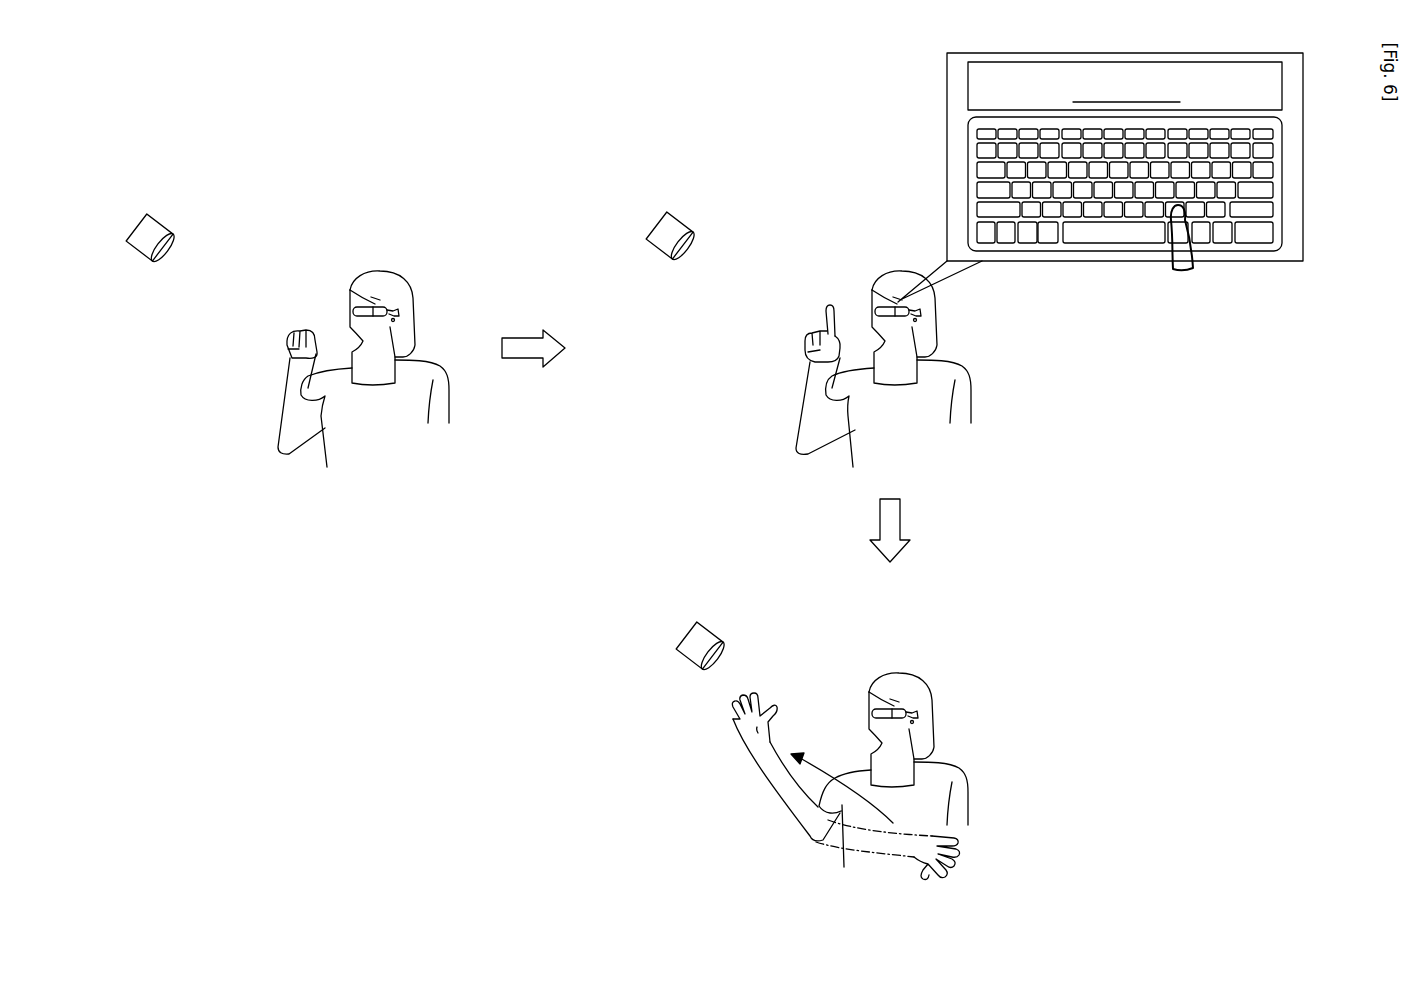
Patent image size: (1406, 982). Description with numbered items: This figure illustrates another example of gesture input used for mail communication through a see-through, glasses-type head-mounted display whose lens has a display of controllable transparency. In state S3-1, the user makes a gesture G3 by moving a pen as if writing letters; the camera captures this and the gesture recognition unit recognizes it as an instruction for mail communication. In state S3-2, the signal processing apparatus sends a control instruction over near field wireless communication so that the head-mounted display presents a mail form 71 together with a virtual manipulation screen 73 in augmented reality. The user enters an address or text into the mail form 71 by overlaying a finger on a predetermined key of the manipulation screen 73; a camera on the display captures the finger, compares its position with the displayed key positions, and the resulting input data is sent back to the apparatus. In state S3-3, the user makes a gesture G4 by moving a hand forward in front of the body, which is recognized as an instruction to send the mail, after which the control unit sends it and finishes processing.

The mail form 71 is at (1303, 76).
The manipulation screen 73 is at (1303, 182).
The gesture G3 is at (274, 319).
The gesture G4 is at (756, 810).
The state S3-1 is at (429, 236).
The state S3-2 is at (835, 231).
The state S3-3 is at (945, 639).